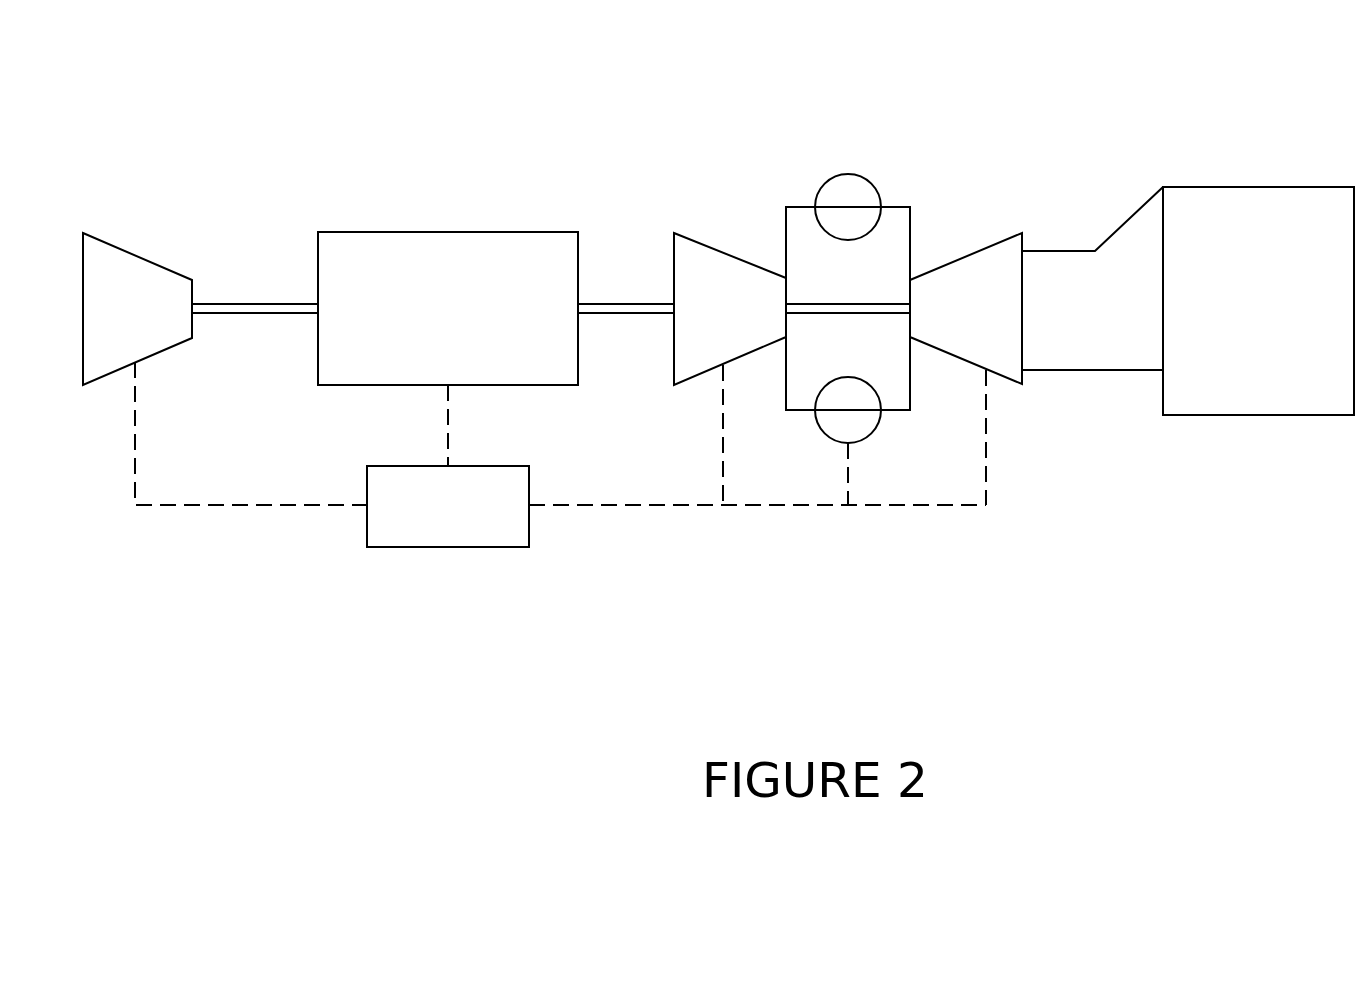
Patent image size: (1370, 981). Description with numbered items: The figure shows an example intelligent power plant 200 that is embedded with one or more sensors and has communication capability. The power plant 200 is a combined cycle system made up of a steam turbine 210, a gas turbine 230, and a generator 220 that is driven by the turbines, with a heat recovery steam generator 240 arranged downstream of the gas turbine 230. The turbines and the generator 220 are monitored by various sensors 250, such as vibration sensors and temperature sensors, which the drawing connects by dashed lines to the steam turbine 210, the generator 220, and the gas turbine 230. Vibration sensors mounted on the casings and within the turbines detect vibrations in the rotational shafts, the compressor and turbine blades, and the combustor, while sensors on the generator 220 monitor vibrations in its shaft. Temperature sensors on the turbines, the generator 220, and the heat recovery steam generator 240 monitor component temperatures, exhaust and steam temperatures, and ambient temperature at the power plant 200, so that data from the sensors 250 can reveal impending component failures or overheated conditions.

The power plant 200 is at (412, 103).
The steam turbine 210 is at (110, 321).
The generator 220 is at (480, 232).
The gas turbine 230 is at (878, 124).
The heat recovery steam generator 240 is at (1257, 187).
The sensors 250 is at (448, 547).